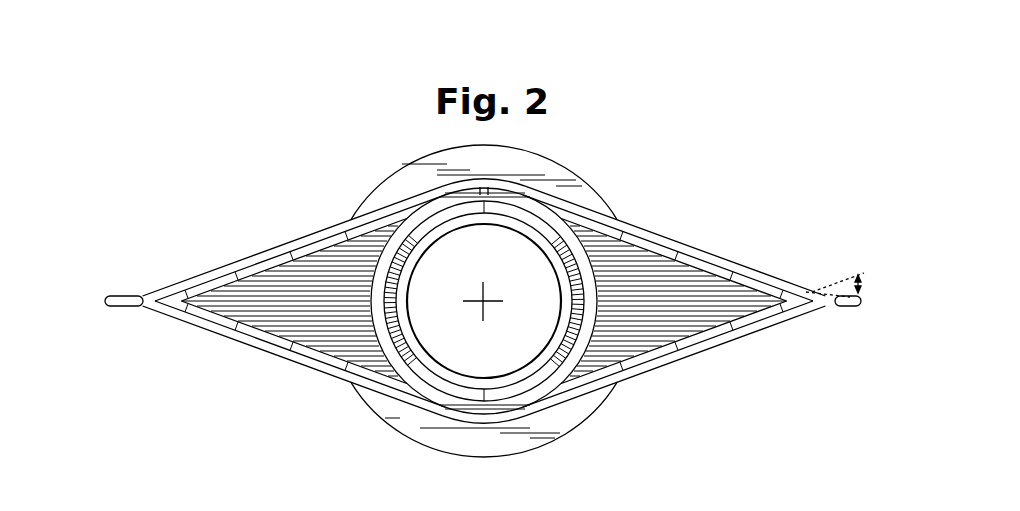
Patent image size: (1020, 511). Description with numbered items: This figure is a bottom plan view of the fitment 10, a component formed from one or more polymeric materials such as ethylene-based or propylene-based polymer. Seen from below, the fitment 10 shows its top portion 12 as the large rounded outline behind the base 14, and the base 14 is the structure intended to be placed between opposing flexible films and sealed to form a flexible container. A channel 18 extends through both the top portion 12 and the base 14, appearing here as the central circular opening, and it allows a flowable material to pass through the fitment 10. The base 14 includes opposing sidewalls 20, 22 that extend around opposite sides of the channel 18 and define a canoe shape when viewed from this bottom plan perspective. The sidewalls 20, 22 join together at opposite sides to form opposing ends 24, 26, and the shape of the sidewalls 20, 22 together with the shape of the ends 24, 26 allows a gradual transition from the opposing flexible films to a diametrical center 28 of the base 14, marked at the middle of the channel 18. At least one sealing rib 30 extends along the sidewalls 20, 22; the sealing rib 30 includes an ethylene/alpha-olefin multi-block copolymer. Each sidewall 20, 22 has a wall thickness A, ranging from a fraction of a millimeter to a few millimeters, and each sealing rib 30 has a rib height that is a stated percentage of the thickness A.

The fitment 10 is at (665, 172).
The top portion 12 is at (577, 158).
The base 14 is at (692, 238).
The channel 18 is at (443, 263).
The sidewall 20 is at (283, 243).
The sidewall 22 is at (292, 350).
The end 24 is at (100, 301).
The end 26 is at (863, 308).
The diametrical center 28 is at (490, 303).
The sealing rib 30 is at (237, 262).
The wall thickness A is at (862, 284).